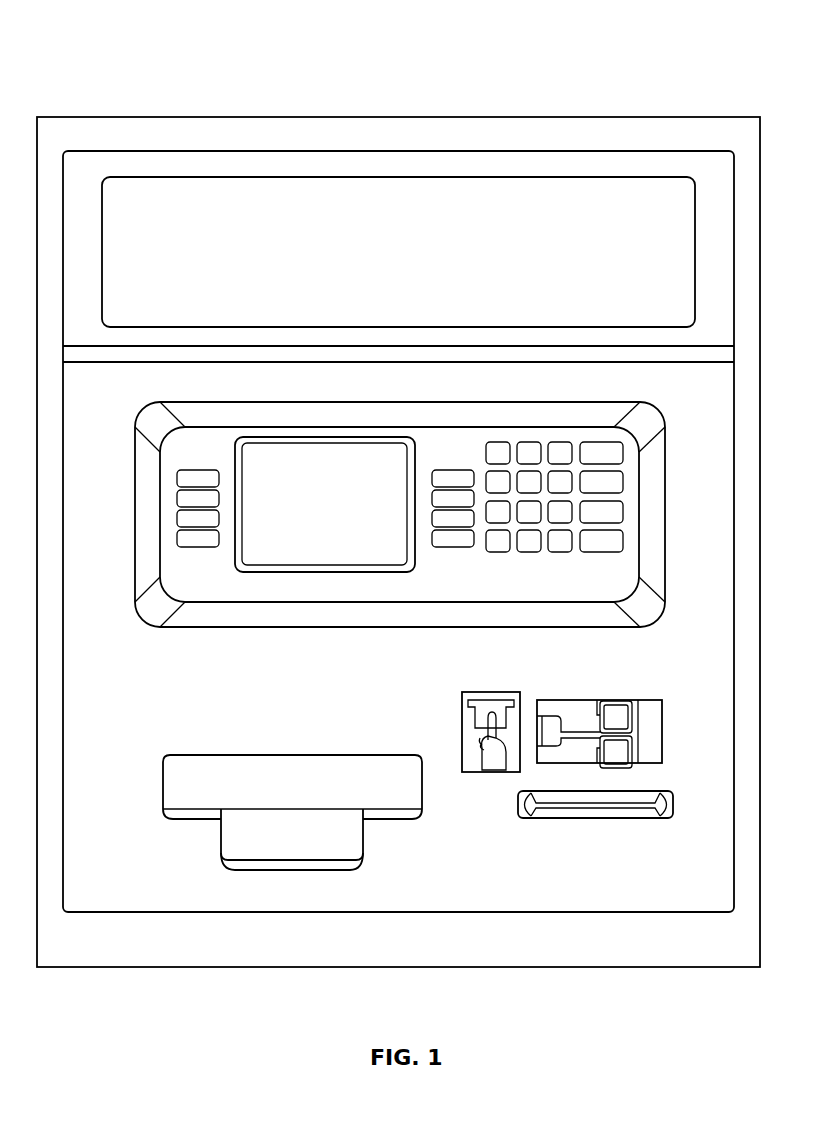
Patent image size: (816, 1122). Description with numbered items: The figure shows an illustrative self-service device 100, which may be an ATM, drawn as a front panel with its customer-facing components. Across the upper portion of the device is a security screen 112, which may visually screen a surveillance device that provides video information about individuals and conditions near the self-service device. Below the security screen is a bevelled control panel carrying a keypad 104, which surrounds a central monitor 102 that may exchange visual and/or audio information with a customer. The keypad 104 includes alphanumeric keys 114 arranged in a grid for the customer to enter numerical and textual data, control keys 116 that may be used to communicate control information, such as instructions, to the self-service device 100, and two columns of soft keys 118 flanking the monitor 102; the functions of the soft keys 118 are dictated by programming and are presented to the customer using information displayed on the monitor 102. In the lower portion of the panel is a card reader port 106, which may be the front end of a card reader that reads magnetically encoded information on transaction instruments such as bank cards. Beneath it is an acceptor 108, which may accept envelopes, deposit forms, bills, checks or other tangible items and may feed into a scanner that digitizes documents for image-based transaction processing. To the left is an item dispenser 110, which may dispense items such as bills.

The self-service device 100 is at (122, 44).
The monitor 102 is at (352, 440).
The keypad 104 is at (446, 583).
The card reader port 106 is at (660, 700).
The acceptor 108 is at (658, 791).
The item dispenser 110 is at (188, 755).
The security screen 112 is at (620, 177).
The alphanumeric keys 114 is at (496, 553).
The control keys 116 is at (607, 437).
The soft keys 118 is at (203, 458).